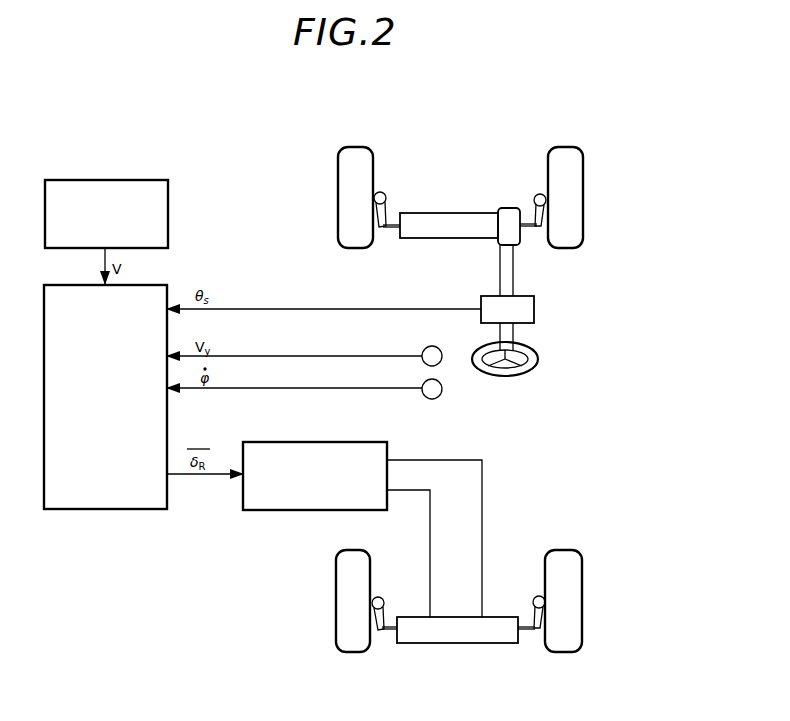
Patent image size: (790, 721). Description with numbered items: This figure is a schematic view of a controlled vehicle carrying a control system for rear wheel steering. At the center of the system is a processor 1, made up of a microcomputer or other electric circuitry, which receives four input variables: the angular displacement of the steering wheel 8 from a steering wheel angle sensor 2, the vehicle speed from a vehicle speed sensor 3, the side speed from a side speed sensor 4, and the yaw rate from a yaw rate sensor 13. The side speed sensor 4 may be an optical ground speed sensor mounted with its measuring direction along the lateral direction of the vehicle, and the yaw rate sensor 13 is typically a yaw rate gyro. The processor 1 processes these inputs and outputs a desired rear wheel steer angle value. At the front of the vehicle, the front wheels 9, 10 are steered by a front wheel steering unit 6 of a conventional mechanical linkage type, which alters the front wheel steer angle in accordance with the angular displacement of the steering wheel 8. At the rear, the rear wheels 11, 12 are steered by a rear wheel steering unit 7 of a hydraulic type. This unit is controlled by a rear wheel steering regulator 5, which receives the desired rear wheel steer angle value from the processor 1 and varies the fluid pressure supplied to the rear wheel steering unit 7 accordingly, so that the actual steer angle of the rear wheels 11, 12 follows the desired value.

The processor 1 is at (56, 510).
The steering wheel angle sensor 2 is at (535, 302).
The vehicle speed sensor 3 is at (155, 180).
The side speed sensor 4 is at (442, 363).
The rear wheel steering regulator 5 is at (256, 511).
The front wheel steering unit 6 is at (461, 213).
The rear wheel steering unit 7 is at (461, 645).
The steering wheel 8 is at (538, 362).
The front wheel 9 is at (585, 166).
The front wheel 10 is at (336, 158).
The rear wheel 11 is at (584, 637).
The rear wheel 12 is at (334, 633).
The yaw rate sensor 13 is at (440, 396).